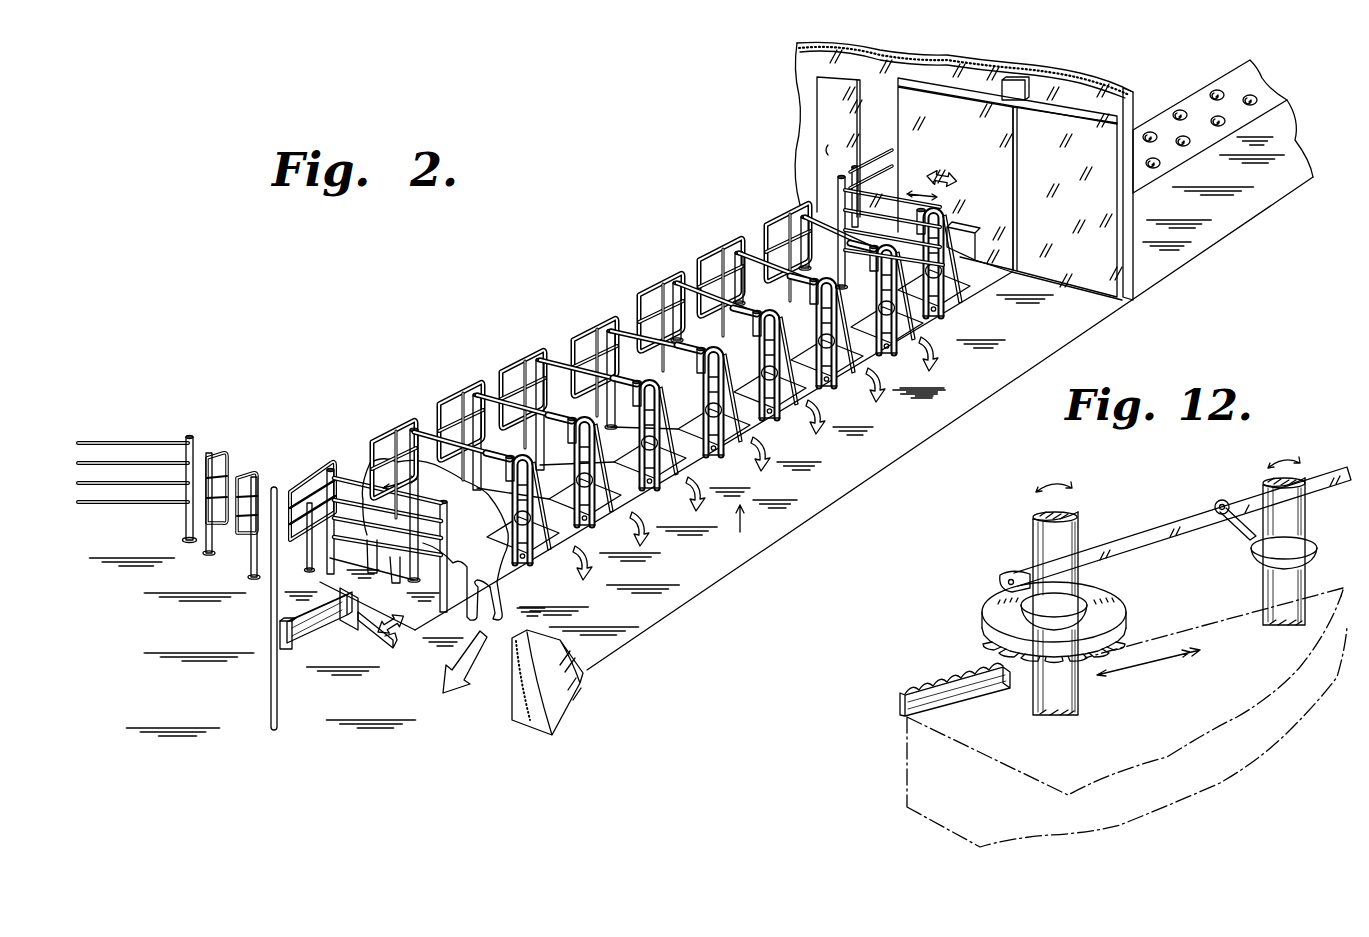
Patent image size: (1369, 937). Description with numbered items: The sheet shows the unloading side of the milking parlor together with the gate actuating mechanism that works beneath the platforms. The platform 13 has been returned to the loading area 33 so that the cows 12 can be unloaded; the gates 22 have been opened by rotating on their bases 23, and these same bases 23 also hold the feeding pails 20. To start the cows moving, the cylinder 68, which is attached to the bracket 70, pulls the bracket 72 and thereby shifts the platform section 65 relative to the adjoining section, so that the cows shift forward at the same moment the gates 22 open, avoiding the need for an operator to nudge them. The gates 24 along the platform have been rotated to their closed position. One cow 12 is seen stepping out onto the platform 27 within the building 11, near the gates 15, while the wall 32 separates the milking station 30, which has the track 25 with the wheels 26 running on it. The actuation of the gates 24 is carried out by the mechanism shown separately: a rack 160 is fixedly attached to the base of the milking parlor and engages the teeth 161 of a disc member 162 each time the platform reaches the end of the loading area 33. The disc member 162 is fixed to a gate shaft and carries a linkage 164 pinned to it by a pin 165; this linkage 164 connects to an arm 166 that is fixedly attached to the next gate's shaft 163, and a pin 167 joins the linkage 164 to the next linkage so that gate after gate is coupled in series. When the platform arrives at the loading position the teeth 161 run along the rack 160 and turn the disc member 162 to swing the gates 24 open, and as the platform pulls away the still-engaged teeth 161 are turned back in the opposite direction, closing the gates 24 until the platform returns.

In FIG. 2, the building 11 is at (563, 690).
In FIG. 2, the cow 12 is at (503, 574).
In FIG. 2, the platform 13 is at (697, 461).
In FIG. 2, the gates 15 is at (210, 525).
In FIG. 2, the feeding pails 20 is at (590, 520).
In FIG. 2, the gates 22 is at (730, 423).
In FIG. 2, the bases 23 is at (535, 567).
In FIG. 2, the gates 24 is at (512, 362).
In FIG. 2, the track 25 is at (1247, 113).
In FIG. 2, the wheels 26 is at (1188, 145).
In FIG. 2, the platform 27 is at (650, 612).
In FIG. 2, the milking station 30 is at (1228, 219).
In FIG. 2, the wall 32 is at (1113, 260).
In FIG. 2, the loading area 33 is at (743, 532).
In FIG. 2, the platform section 65 is at (403, 638).
In FIG. 2, the cylinder 68 is at (298, 643).
In FIG. 2, the bracket 70 is at (330, 627).
In FIG. 2, the bracket 72 is at (380, 647).
In FIG. 12, the rack 160 is at (918, 673).
In FIG. 12, the teeth 161 is at (1020, 653).
In FIG. 12, the disc member 162 is at (993, 620).
In FIG. 12, the shaft 163 is at (1048, 539).
In FIG. 12, the linkage 164 is at (1147, 537).
In FIG. 12, the pin 165 is at (1008, 580).
In FIG. 12, the arm 166 is at (1240, 543).
In FIG. 12, the pin 167 is at (1220, 507).